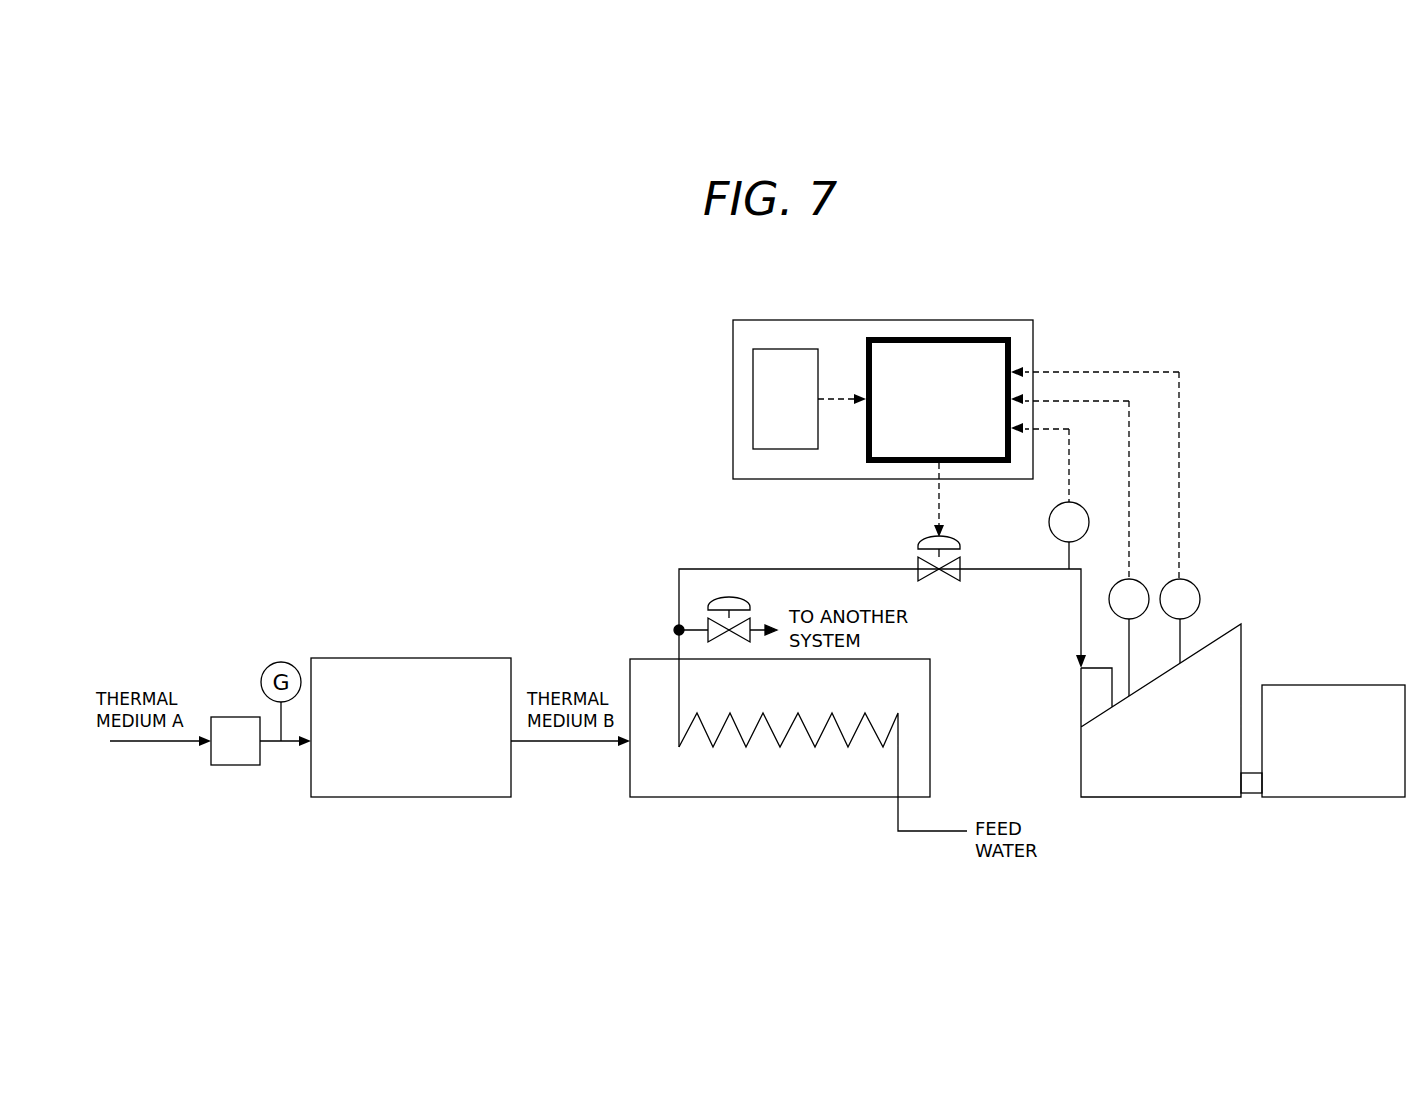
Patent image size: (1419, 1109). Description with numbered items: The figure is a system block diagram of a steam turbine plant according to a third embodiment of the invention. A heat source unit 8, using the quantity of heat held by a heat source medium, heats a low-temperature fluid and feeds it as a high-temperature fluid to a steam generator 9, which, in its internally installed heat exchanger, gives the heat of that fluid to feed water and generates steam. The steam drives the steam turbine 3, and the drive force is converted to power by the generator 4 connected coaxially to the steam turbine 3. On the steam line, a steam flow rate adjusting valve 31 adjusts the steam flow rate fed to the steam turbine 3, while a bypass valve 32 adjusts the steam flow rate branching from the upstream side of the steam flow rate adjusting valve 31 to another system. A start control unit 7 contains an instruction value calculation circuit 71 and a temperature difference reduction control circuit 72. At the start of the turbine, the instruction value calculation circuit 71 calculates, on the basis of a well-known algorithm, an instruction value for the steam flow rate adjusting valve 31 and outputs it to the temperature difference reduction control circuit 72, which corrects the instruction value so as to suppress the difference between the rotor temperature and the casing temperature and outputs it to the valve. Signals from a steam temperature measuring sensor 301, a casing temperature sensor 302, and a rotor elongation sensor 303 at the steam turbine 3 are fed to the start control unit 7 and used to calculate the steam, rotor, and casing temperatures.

The steam turbine 3 is at (1173, 793).
The generator 4 is at (1343, 793).
The start control unit 7 is at (733, 340).
The heat source unit 8 is at (433, 793).
The steam generator 9 is at (705, 793).
The steam flow rate adjusting valve 31 is at (920, 546).
The bypass valve 32 is at (708, 625).
The instruction value calculation circuit 71 is at (789, 357).
The temperature difference reduction control circuit 72 is at (965, 355).
The steam temperature measuring sensor 301 is at (1089, 512).
The casing temperature sensor 302 is at (1140, 585).
The rotor elongation sensor 303 is at (1195, 590).